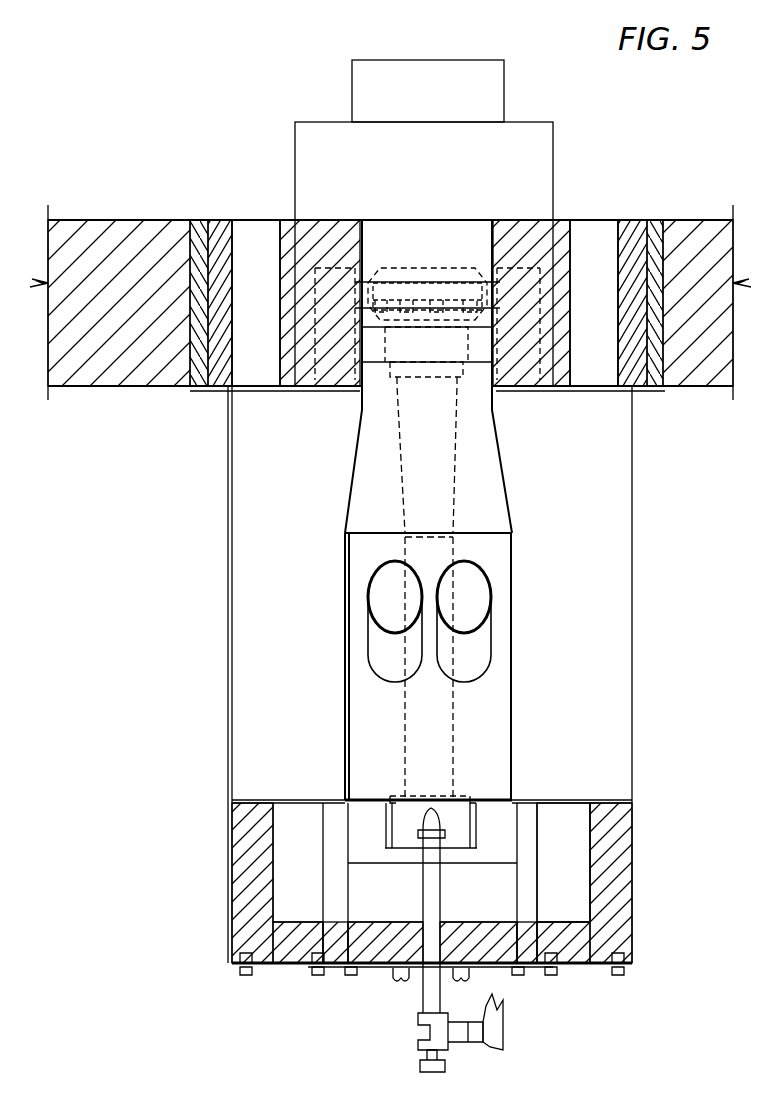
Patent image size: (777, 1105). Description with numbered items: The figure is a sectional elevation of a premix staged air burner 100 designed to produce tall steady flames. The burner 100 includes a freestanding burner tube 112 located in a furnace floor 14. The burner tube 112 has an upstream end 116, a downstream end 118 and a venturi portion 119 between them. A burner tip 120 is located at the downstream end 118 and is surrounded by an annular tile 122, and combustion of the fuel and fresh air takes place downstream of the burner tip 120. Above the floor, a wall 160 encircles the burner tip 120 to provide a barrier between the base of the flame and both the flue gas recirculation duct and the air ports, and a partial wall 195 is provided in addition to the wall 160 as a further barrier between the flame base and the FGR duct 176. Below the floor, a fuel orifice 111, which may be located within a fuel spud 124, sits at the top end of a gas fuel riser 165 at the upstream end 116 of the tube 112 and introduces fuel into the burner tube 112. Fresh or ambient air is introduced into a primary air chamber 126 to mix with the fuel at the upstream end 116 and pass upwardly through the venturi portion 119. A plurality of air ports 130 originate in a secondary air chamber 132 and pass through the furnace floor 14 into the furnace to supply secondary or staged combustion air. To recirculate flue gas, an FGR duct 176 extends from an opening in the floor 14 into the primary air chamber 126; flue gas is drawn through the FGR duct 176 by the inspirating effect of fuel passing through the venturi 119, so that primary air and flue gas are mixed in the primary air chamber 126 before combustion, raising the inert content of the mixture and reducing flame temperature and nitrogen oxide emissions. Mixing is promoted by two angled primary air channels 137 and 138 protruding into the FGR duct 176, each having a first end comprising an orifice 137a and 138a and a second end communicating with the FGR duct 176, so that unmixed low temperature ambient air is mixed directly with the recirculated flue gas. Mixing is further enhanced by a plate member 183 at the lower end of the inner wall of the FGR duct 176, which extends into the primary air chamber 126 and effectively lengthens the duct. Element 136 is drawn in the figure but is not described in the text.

The premix staged air burner 100 is at (282, 88).
The furnace floor 14 is at (690, 220).
The air ports 130 is at (241, 275).
The partial wall 195 is at (485, 58).
The wall 160 is at (540, 122).
The annular tile 122 is at (545, 222).
The burner tip 120 is at (396, 268).
The downstream end 118 is at (448, 268).
The funnel 136 is at (483, 445).
The venturi portion 119 is at (450, 500).
The burner tube 112 is at (448, 556).
The orifice 138a is at (385, 595).
The orifice 137a is at (475, 595).
The primary air channel 138 is at (376, 659).
The primary air channel 137 is at (456, 659).
The secondary air chamber 132 is at (571, 636).
The FGR duct 176 is at (345, 688).
The upstream end 116 is at (405, 796).
The fuel orifice 111 is at (430, 798).
The fuel spud 124 is at (422, 815).
The plate member 183 is at (520, 840).
The gas fuel riser 165 is at (440, 882).
The primary air chamber 126 is at (549, 897).